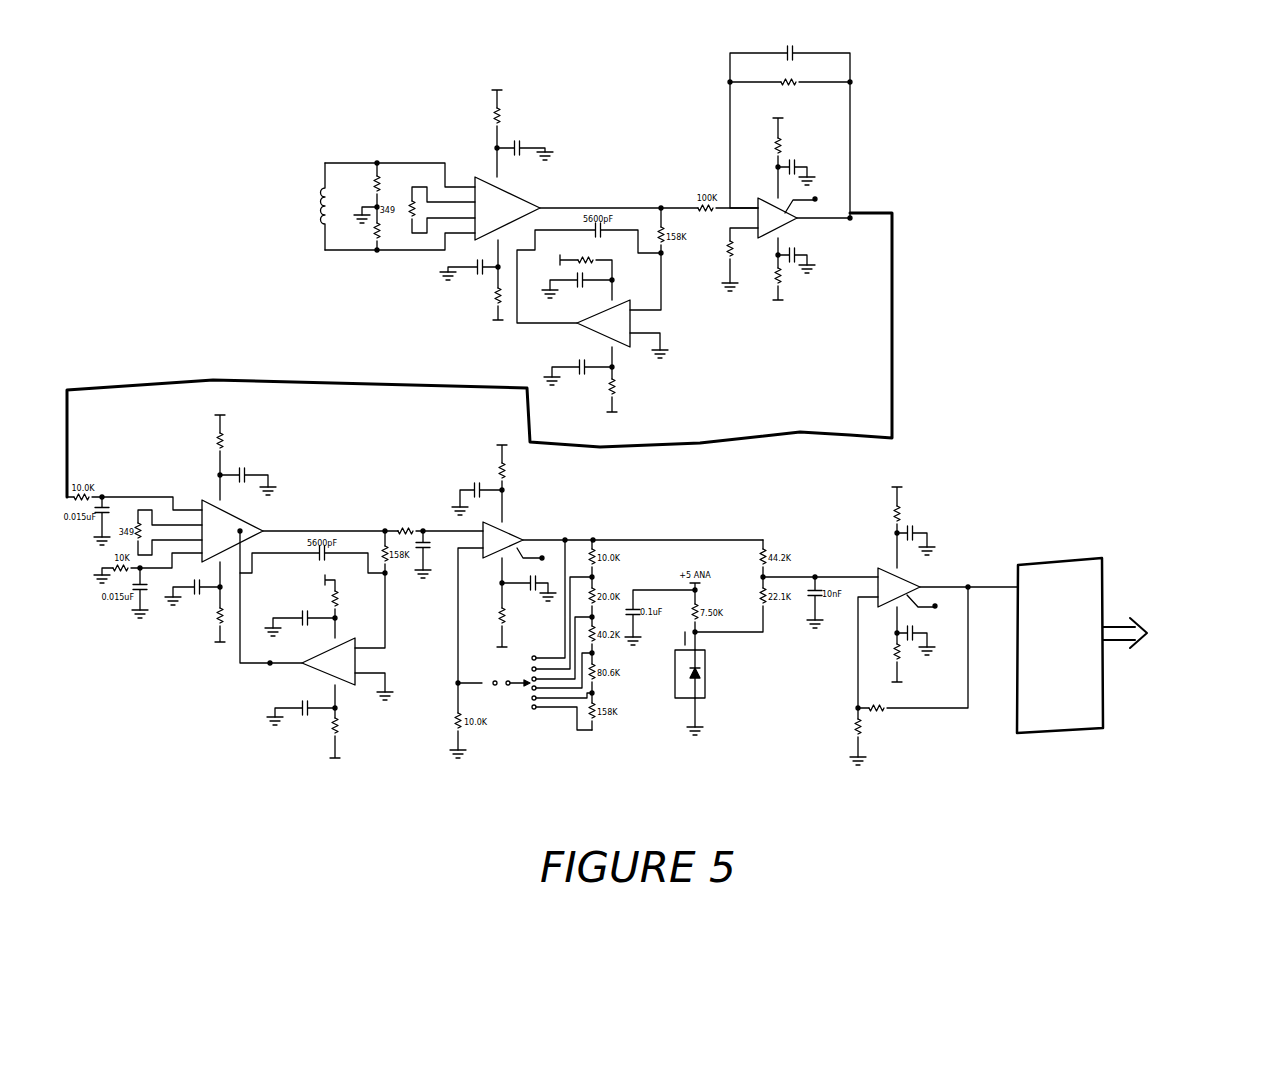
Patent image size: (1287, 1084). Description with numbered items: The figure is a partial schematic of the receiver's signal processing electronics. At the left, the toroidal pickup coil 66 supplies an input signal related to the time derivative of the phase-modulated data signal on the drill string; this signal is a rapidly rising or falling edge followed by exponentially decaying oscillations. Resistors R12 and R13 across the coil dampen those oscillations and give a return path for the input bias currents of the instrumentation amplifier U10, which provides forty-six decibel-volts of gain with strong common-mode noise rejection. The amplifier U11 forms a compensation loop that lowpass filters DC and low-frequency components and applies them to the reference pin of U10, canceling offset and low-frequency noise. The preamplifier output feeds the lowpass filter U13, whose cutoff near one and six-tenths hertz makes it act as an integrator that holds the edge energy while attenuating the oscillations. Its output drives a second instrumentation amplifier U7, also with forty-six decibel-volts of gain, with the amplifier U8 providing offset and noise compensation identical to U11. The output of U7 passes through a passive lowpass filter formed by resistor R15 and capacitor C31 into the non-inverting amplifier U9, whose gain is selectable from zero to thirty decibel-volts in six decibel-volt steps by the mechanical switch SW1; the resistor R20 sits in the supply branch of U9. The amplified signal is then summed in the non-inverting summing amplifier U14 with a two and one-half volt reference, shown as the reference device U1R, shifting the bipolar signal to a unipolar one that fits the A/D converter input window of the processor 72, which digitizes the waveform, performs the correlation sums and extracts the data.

The pickup coil 66 is at (323, 187).
The resistor R12 is at (371, 175).
The resistor R13 is at (372, 240).
The instrumentation amplifier U10 is at (522, 197).
The lowpass filter U13 is at (768, 197).
The amplifier U11 is at (633, 323).
The instrumentation amplifier U7 is at (251, 522).
The resistor R15 is at (392, 523).
The resistor R20 is at (503, 472).
The non-inverting amplifier U9 is at (513, 533).
The capacitor C31 is at (443, 565).
The amplifier U8 is at (352, 688).
The switch SW1 is at (528, 702).
The voltage reference U1R is at (706, 687).
The non-inverting summing amplifier U14 is at (905, 578).
The processor 72 is at (1082, 558).